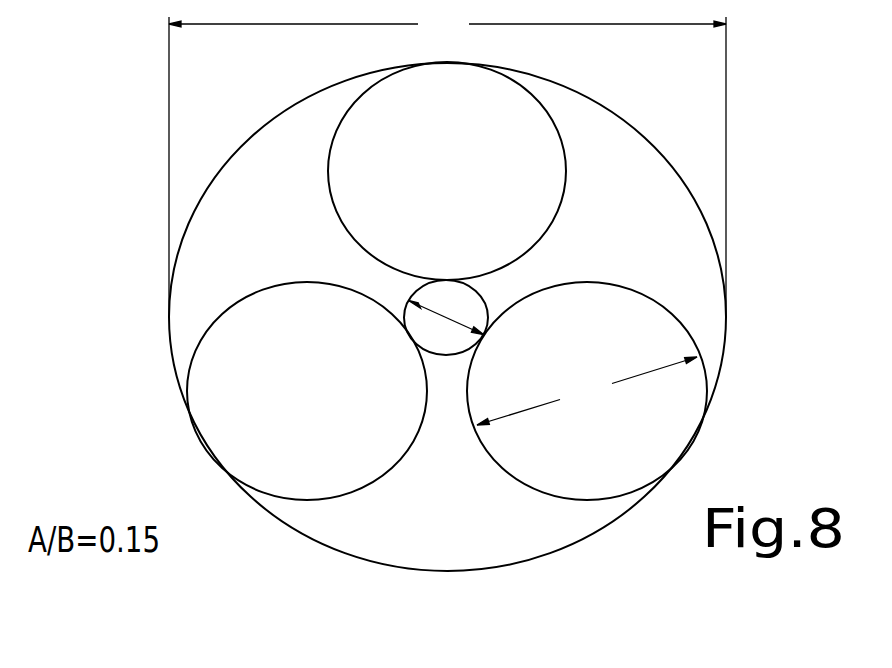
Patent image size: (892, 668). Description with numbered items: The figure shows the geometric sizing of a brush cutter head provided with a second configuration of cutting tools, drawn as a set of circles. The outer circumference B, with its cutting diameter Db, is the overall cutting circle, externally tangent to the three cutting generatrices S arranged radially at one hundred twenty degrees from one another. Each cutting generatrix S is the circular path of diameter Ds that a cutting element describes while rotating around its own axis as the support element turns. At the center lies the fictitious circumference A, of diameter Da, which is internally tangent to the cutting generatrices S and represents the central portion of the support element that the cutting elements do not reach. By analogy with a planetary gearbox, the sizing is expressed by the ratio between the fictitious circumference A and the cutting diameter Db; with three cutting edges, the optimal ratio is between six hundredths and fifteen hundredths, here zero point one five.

The circumference B is at (581, 548).
The cutting generatrix S is at (565, 141).
The fictitious circumference A is at (447, 358).
The cutting diameter Db is at (447, 164).
The diameter of the fictitious circumference Da is at (408, 300).
The diameter of the cutting generatrix Ds is at (587, 391).